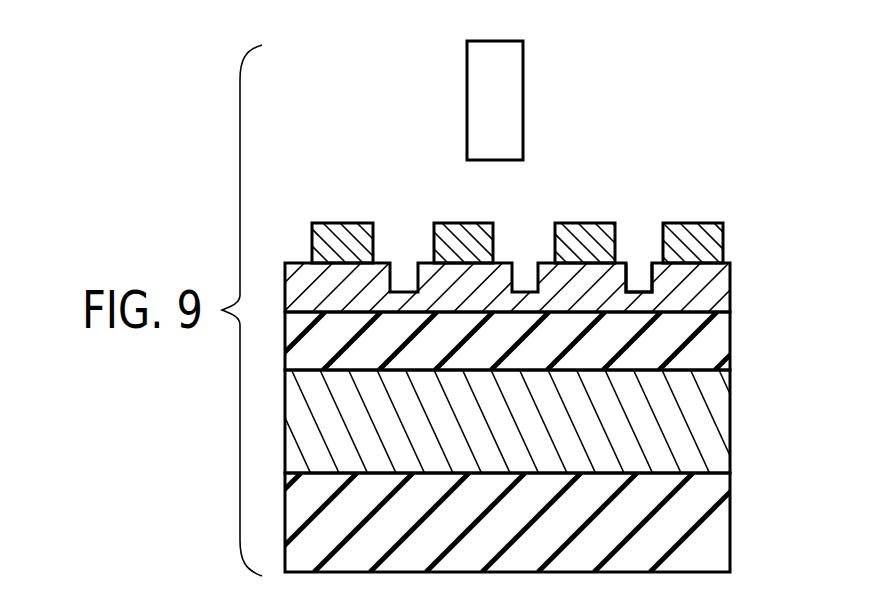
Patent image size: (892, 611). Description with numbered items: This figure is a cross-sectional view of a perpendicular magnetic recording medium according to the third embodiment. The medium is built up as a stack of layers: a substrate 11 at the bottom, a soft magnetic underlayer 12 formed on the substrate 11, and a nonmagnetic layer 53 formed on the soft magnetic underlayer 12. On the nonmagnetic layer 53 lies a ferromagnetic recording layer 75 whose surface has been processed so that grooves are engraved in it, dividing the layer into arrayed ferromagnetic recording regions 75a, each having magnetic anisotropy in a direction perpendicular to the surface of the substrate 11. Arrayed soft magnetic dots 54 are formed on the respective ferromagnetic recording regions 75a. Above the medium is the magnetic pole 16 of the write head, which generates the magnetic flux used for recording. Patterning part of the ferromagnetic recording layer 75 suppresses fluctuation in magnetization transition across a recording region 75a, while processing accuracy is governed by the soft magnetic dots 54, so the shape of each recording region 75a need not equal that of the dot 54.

The substrate 11 is at (732, 525).
The soft magnetic underlayer 12 is at (732, 412).
The nonmagnetic layer 53 is at (730, 335).
The ferromagnetic recording layer 75 is at (730, 278).
The ferromagnetic recording region 75a is at (618, 275).
The soft magnetic dot 54 is at (345, 225).
The magnetic pole 16 is at (518, 92).